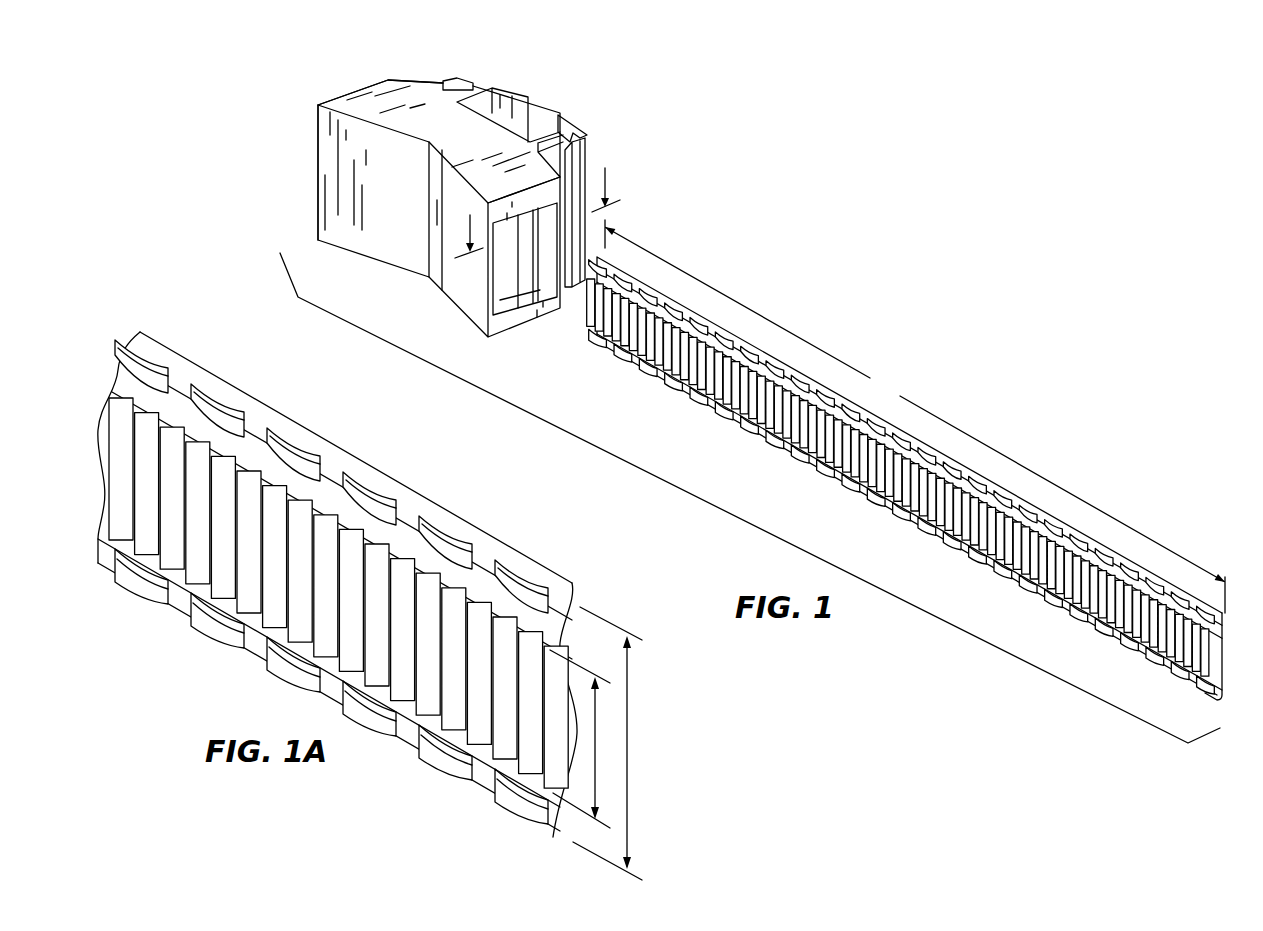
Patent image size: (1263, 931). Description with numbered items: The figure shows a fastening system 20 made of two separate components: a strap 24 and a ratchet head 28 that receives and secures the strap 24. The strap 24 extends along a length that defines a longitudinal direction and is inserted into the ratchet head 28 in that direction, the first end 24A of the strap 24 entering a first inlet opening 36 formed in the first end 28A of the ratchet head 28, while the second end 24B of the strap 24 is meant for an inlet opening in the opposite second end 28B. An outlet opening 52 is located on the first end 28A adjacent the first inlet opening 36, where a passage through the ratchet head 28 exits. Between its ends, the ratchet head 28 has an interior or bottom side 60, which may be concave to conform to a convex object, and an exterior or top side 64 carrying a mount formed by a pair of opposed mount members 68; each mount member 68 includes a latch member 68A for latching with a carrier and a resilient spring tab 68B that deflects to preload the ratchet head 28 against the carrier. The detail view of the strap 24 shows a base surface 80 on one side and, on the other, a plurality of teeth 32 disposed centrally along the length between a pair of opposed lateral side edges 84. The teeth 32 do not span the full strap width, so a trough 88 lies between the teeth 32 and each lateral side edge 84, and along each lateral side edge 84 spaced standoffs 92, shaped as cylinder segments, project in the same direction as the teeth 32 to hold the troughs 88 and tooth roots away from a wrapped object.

In FIG. 1, the fastening system 20 is at (640, 468).
In FIG. 1, the strap 24 is at (1032, 440).
In FIG. 1A, the strap 24 is at (183, 333).
In FIG. 1, the first end of the strap 24A is at (573, 292).
In FIG. 1, the second end of the strap 24B is at (1222, 706).
In FIG. 1, the ratchet head 28 is at (633, 103).
In FIG. 1, the first end of the ratchet head 28A is at (512, 320).
In FIG. 1, the second end of the ratchet head 28B is at (318, 172).
In FIG. 1, the teeth 32 is at (896, 497).
In FIG. 1A, the teeth 32 is at (125, 437).
In FIG. 1, the first inlet opening 36 is at (547, 232).
In FIG. 1, the outlet opening 52 is at (545, 255).
In FIG. 1, the bottom side 60 is at (406, 200).
In FIG. 1, the top side 64 is at (405, 81).
In FIG. 1, the mount members 68 is at (471, 83).
In FIG. 1, the latch member 68A is at (452, 80).
In FIG. 1, the resilient spring tab 68B is at (548, 104).
In FIG. 1, the base surface 80 is at (1122, 543).
In FIG. 1A, the base surface 80 is at (483, 523).
In FIG. 1, the lateral side edges 84 is at (768, 333).
In FIG. 1A, the lateral side edges 84 is at (247, 390).
In FIG. 1, the troughs 88 is at (909, 447).
In FIG. 1A, the troughs 88 is at (308, 482).
In FIG. 1, the standoffs 92 is at (985, 566).
In FIG. 1A, the standoffs 92 is at (400, 530).